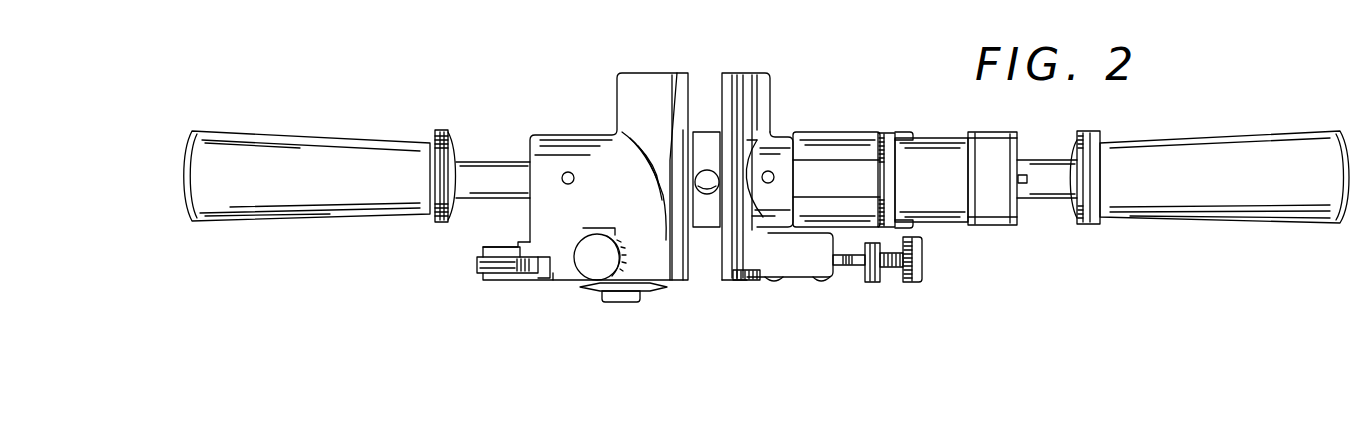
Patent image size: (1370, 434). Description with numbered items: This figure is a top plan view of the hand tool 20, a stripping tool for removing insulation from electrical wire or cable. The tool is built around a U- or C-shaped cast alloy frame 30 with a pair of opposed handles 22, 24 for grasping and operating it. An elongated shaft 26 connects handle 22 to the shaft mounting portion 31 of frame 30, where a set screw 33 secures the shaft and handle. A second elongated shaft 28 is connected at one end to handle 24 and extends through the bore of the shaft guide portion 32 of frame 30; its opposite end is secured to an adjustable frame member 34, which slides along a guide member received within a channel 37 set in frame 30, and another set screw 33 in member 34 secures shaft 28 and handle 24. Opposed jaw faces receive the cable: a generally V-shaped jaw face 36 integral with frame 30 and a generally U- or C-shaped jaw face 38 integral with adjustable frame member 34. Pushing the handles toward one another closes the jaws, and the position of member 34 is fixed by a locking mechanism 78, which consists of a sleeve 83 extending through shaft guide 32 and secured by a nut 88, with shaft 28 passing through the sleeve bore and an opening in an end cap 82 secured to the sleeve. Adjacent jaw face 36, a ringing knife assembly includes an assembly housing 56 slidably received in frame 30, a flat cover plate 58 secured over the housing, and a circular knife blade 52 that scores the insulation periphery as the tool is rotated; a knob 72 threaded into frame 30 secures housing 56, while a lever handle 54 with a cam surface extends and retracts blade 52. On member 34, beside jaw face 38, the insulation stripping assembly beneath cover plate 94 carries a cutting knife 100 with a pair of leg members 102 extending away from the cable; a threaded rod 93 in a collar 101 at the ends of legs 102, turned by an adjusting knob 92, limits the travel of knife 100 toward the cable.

The hand tool 20 is at (588, 92).
The handle 22 is at (336, 143).
The handle 24 is at (1210, 148).
The elongated shaft 26 is at (483, 175).
The elongated shaft 28 is at (857, 170).
The frame 30 is at (832, 135).
The shaft mounting portion 31 is at (548, 143).
The shaft guide portion 32 is at (938, 148).
The set screw 33 is at (573, 183).
The adjustable frame member 34 is at (775, 152).
The jaw face 36 is at (683, 92).
The channel 37 is at (712, 193).
The jaw face 38 is at (720, 93).
The circular knife blade 52 is at (656, 290).
The lever handle 54 is at (478, 268).
The assembly housing 56 is at (512, 247).
The cover plate 58 is at (528, 280).
The knob 72 is at (615, 255).
The locking mechanism 78 is at (1005, 122).
The end cap 82 is at (1007, 217).
The sleeve 83 is at (970, 227).
The nut 88 is at (885, 135).
The adjusting knob 92 is at (925, 268).
The threaded rod 93 is at (892, 267).
The cover plate 94 is at (798, 273).
The cutting knife 100 is at (735, 277).
The collar 101 is at (867, 282).
The leg members 102 is at (847, 267).